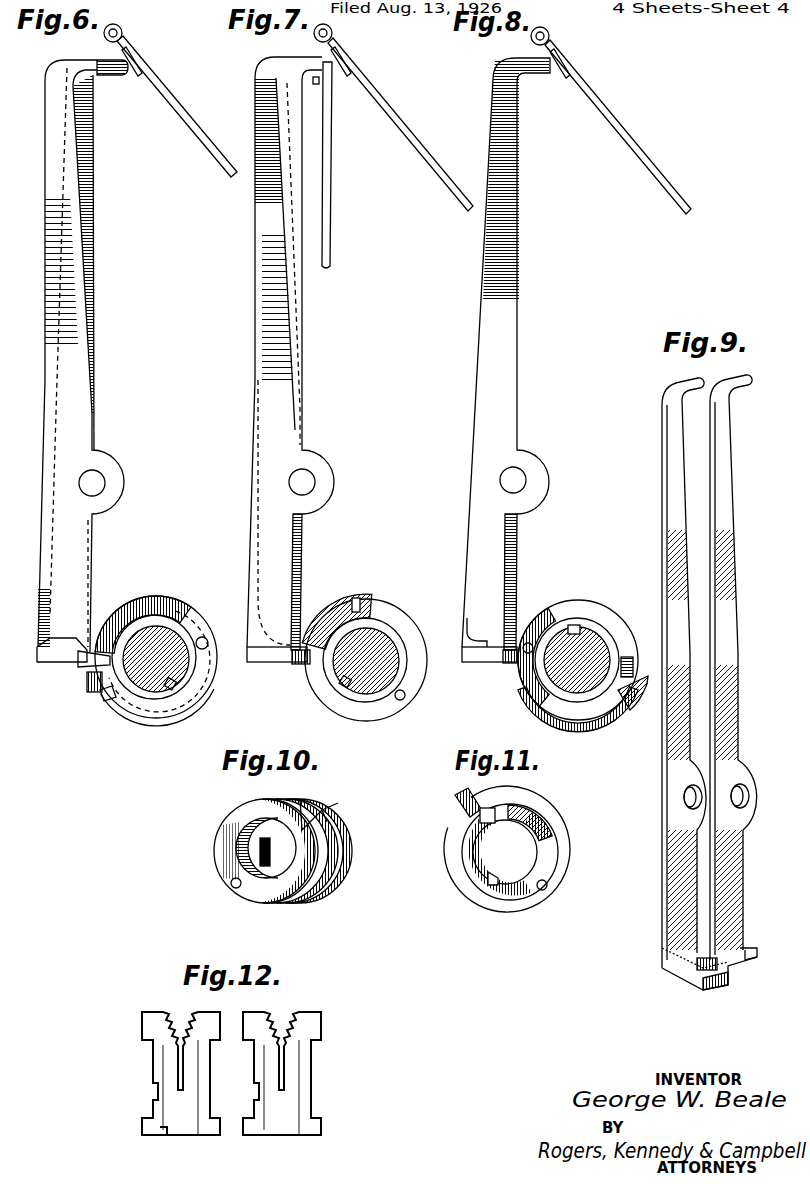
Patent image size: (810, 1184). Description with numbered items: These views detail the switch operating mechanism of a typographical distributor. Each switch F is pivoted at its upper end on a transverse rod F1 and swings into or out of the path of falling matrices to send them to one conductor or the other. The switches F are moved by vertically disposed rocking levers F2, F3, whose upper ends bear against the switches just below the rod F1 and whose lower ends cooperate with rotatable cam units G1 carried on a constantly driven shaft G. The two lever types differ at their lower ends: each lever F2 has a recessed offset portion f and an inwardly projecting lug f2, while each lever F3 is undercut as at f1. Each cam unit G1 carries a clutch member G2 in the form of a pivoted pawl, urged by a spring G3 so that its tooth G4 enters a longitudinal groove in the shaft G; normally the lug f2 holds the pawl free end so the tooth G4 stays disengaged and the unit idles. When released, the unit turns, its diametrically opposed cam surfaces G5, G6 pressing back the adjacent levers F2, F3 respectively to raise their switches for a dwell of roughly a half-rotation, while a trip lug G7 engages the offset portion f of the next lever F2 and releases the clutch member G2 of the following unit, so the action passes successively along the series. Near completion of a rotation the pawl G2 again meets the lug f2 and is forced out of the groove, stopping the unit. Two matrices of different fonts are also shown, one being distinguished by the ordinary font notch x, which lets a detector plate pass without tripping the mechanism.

In FIG. 6, the transverse rod F1 is at (122, 35).
In FIG. 7, the transverse rod F1 is at (332, 35).
In FIG. 8, the transverse rod F1 is at (549, 38).
In FIG. 6, the switch F is at (191, 126).
In FIG. 7, the switch F is at (411, 139).
In FIG. 8, the switch F is at (635, 141).
In FIG. 6, the rocking lever F2 is at (72, 300).
In FIG. 7, the rocking lever F2 is at (301, 447).
In FIG. 8, the rocking lever F2 is at (519, 432).
In FIG. 9, the rocking lever F2 is at (667, 833).
In FIG. 7, the rocking lever F3 is at (303, 597).
In FIG. 8, the rocking lever F3 is at (508, 617).
In FIG. 9, the rocking lever F3 is at (740, 713).
In FIG. 6, the recessed offset portion f is at (68, 657).
In FIG. 7, the recessed offset portion f is at (266, 661).
In FIG. 8, the recessed offset portion f is at (473, 659).
In FIG. 9, the recessed offset portion f is at (690, 978).
In FIG. 8, the undercut f1 is at (472, 647).
In FIG. 9, the undercut f1 is at (742, 953).
In FIG. 6, the lug f2 is at (150, 592).
In FIG. 7, the lug f2 is at (300, 663).
In FIG. 8, the lug f2 is at (506, 663).
In FIG. 9, the lug f2 is at (708, 953).
In FIG. 6, the shaft G is at (178, 632).
In FIG. 6, the cam unit G1 is at (209, 638).
In FIG. 7, the cam unit G1 is at (410, 644).
In FIG. 8, the cam unit G1 is at (625, 622).
In FIG. 10, the cam unit G1 is at (290, 906).
In FIG. 11, the cam unit G1 is at (546, 818).
In FIG. 6, the clutch member G2 is at (108, 692).
In FIG. 7, the clutch member G2 is at (362, 613).
In FIG. 8, the clutch member G2 is at (633, 667).
In FIG. 10, the clutch member G2 is at (333, 826).
In FIG. 11, the clutch member G2 is at (477, 852).
In FIG. 11, the spring G3 is at (553, 840).
In FIG. 6, the tooth G4 is at (170, 688).
In FIG. 7, the tooth G4 is at (353, 686).
In FIG. 8, the tooth G4 is at (580, 627).
In FIG. 11, the tooth G4 is at (494, 878).
In FIG. 6, the cam surface G5 is at (157, 615).
In FIG. 7, the cam surface G5 is at (327, 700).
In FIG. 8, the cam surface G5 is at (572, 613).
In FIG. 10, the cam surface G5 is at (349, 870).
In FIG. 11, the cam surface G5 is at (462, 900).
In FIG. 10, the cam surface G6 is at (236, 818).
In FIG. 6, the trip lug G7 is at (90, 674).
In FIG. 7, the trip lug G7 is at (346, 612).
In FIG. 8, the trip lug G7 is at (640, 700).
In FIG. 10, the trip lug G7 is at (322, 808).
In FIG. 11, the trip lug G7 is at (458, 798).
In FIG. 12, the section block X is at (256, 1057).
In FIG. 12, the font notch x is at (168, 1127).